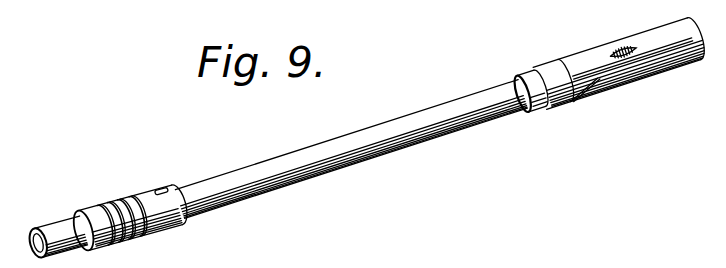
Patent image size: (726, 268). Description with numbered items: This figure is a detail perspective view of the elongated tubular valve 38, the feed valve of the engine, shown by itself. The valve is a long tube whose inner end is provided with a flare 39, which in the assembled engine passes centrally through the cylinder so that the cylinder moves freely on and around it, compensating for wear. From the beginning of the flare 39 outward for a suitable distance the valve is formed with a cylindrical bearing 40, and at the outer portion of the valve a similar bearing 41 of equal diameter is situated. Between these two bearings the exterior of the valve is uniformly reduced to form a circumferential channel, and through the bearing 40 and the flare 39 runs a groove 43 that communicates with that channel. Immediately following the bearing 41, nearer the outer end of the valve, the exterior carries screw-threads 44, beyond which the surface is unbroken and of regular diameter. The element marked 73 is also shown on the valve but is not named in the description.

The elongated tubular valve 38 is at (351, 149).
The flare 39 is at (653, 36).
The cylindrical bearing 40 is at (540, 72).
The bearing 41 is at (143, 198).
The groove 43 is at (590, 97).
The screw-threads 44 is at (132, 238).
The grip pad 73 is at (617, 35).